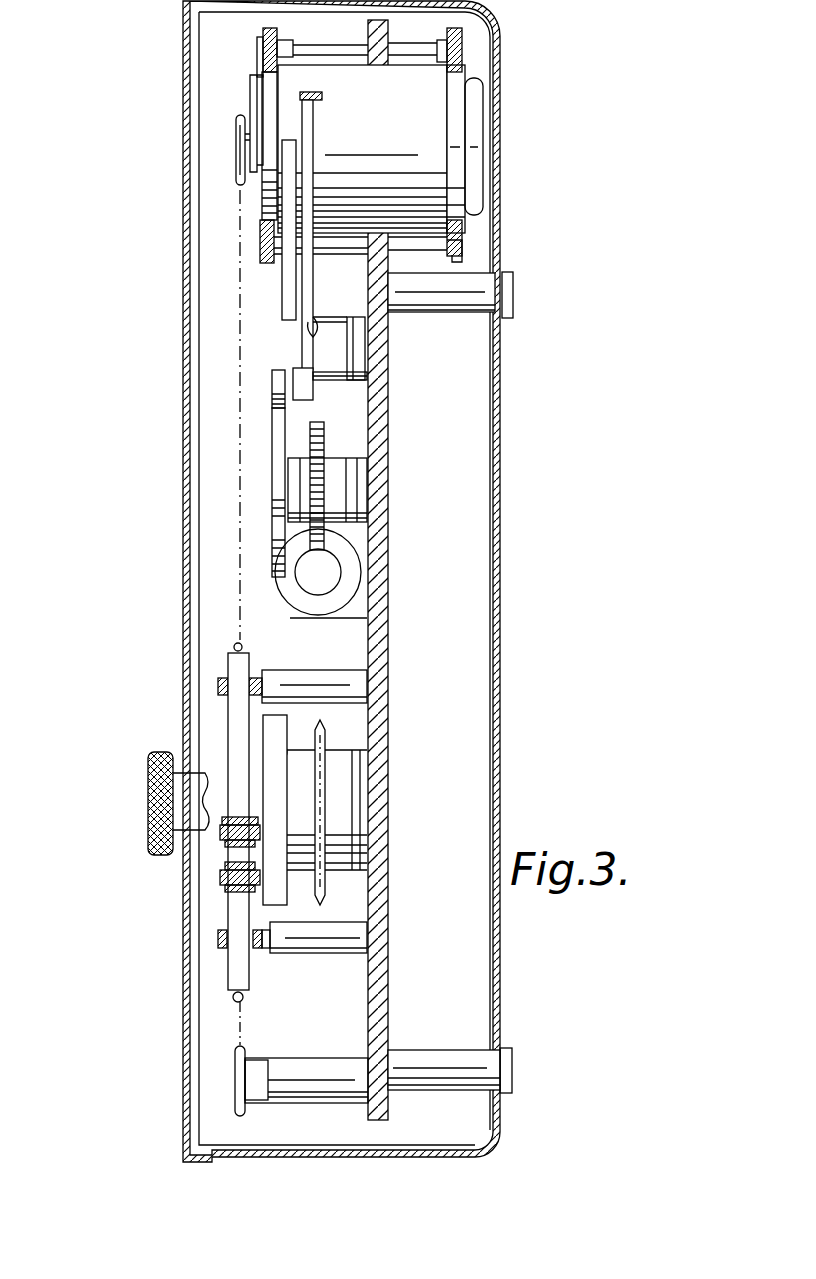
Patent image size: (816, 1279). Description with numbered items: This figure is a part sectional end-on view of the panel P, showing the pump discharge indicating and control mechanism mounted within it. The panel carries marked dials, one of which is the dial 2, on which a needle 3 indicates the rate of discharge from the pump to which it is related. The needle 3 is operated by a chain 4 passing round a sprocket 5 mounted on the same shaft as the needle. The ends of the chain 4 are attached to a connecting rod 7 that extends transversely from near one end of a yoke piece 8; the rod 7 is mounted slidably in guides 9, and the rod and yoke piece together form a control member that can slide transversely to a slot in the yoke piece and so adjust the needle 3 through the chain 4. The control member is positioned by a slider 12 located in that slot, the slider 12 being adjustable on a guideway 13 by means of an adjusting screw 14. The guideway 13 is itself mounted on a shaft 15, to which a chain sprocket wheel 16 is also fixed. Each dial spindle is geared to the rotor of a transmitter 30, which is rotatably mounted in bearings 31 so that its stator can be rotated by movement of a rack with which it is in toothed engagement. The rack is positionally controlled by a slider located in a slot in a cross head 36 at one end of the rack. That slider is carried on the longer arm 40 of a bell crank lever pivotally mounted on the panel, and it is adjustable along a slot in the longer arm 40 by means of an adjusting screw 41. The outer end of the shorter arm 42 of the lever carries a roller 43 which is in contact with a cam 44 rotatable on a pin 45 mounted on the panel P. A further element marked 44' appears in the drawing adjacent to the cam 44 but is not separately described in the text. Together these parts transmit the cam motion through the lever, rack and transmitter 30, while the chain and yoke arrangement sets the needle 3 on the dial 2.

The bearings 31 is at (262, 34).
The dial 2 is at (257, 58).
The needle 3 is at (252, 97).
The sprocket 5 is at (238, 135).
The adjusting screw 41 is at (318, 94).
The longer arm 40 is at (310, 127).
The transmitter 30 is at (410, 110).
The cross head 36 is at (287, 292).
The roller 43 is at (272, 378).
The shorter arm 42 is at (305, 392).
The cam 44 is at (207, 492).
The pinion 44' is at (434, 486).
The chain 4 is at (237, 505).
The pin 45 is at (360, 481).
The panel P is at (370, 658).
The guides 9 is at (218, 684).
The connecting rod 7 is at (235, 710).
The adjusting screw 14 is at (265, 752).
The shaft 15 is at (300, 783).
The chain sprocket wheel 16 is at (322, 800).
The slider 12 is at (220, 835).
The yoke piece 8 is at (277, 892).
The guideway 13 is at (235, 892).